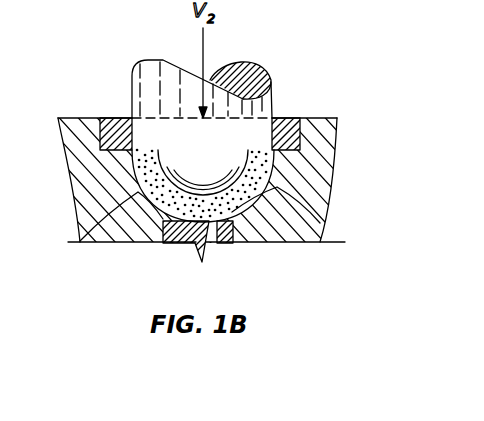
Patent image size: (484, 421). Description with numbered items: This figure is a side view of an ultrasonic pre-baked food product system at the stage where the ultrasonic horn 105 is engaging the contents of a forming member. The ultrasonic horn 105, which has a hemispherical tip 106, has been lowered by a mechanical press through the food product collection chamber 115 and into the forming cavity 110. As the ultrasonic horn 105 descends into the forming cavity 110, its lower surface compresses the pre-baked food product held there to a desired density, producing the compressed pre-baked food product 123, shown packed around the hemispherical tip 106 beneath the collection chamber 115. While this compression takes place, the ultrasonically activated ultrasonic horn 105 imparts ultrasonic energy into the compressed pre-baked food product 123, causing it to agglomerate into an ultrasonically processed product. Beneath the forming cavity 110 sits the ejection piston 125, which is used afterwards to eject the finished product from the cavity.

The ultrasonic horn 105 is at (268, 88).
The hemispherical tip 106 is at (248, 206).
The forming cavity 110 is at (82, 233).
The food product collection chamber 115 is at (116, 117).
The compressed pre-baked food product 123 is at (318, 225).
The ejection piston 125 is at (163, 220).